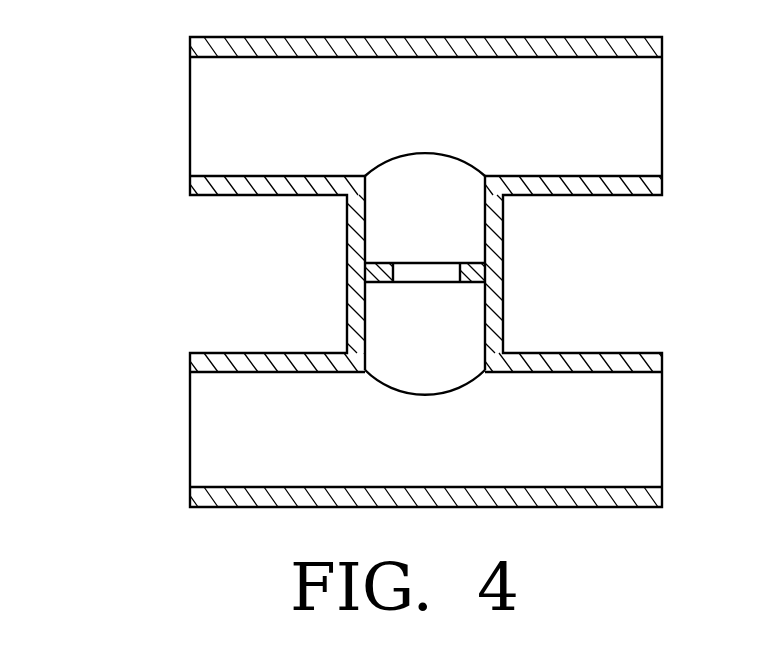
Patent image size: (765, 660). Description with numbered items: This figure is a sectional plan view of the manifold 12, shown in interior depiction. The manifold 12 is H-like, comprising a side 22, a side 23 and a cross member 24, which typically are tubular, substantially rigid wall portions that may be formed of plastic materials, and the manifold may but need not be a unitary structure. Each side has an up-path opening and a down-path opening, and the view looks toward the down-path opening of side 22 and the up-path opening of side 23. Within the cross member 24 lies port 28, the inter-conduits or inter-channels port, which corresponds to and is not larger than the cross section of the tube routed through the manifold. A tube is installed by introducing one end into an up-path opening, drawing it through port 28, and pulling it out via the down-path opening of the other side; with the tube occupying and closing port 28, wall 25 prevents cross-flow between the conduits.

The manifold 12 is at (150, 286).
The side 22 is at (331, 135).
The side 23 is at (333, 452).
The cross member 24 is at (448, 355).
The wall 25 is at (385, 263).
The port 28 is at (423, 275).